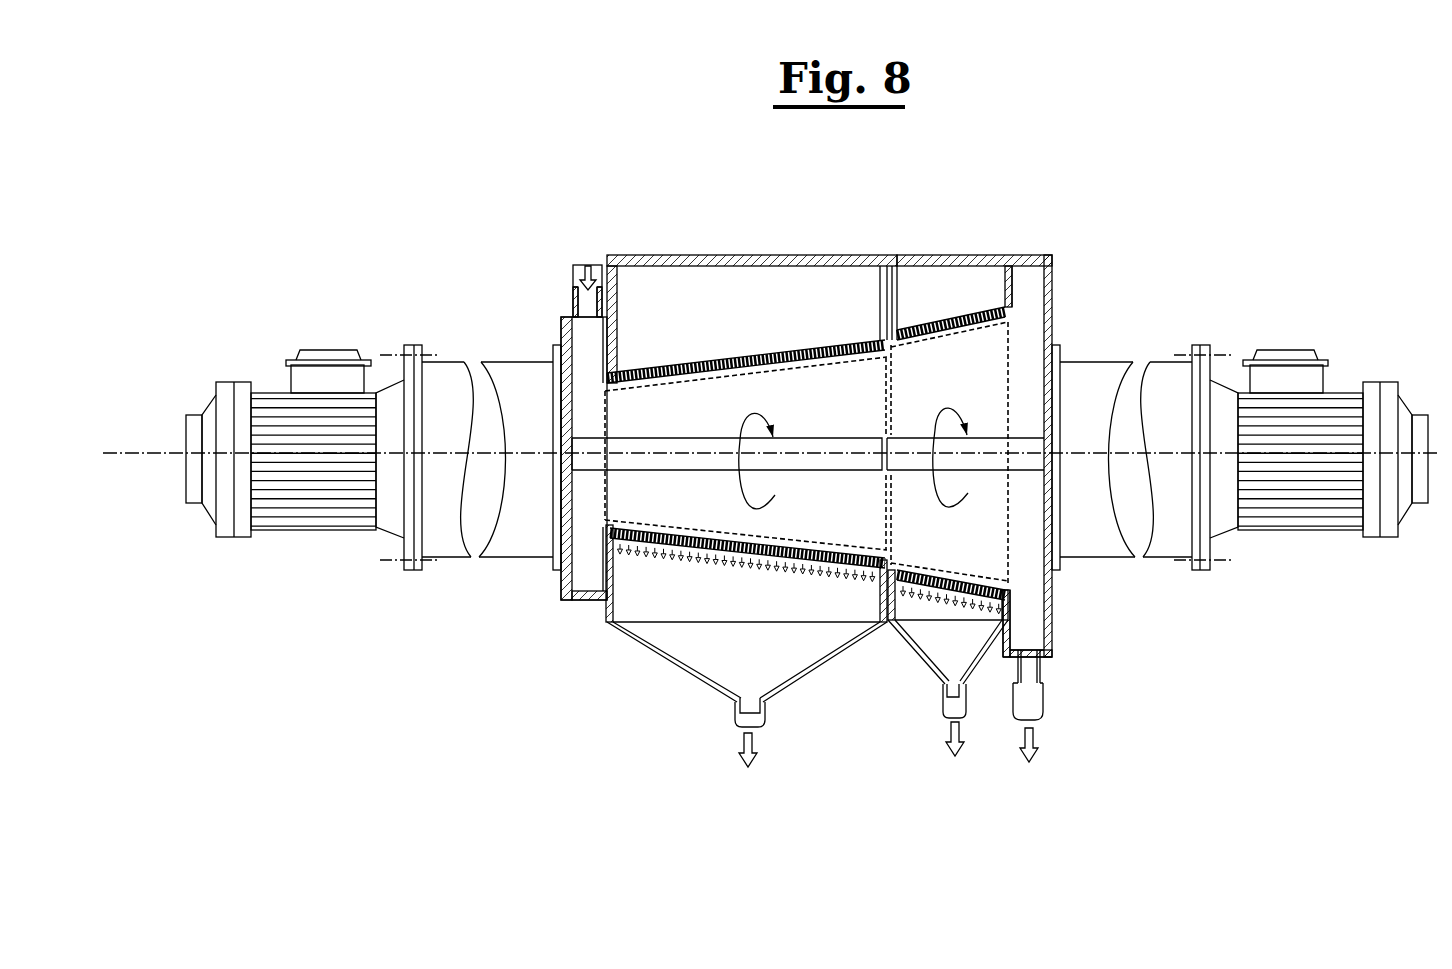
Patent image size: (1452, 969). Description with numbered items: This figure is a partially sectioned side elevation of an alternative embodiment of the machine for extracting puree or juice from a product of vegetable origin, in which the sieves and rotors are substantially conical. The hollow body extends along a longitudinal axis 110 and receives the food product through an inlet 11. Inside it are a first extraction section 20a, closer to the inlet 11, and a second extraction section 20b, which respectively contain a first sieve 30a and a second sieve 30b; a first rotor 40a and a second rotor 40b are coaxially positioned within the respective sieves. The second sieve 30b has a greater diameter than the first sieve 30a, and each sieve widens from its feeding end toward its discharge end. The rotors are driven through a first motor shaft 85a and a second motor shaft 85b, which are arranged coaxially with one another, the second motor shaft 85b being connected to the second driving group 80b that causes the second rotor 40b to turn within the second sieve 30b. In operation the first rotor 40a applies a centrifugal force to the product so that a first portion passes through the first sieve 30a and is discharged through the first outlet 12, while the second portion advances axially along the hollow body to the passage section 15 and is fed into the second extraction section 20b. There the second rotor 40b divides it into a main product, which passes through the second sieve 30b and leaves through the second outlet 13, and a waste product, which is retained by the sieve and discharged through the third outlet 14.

The inlet 11 is at (577, 280).
The first outlet 12 is at (705, 698).
The second outlet 13 is at (915, 670).
The third outlet 14 is at (1048, 673).
The passage section 15 is at (872, 408).
The first extraction section 20a is at (682, 355).
The second extraction section 20b is at (968, 305).
The first sieve 30a is at (730, 320).
The second sieve 30b is at (923, 292).
The first rotor 40a is at (597, 418).
The second rotor 40b is at (1013, 562).
The first motor shaft 85a is at (593, 487).
The second motor shaft 85b is at (1027, 412).
The second driving group 80b is at (1299, 550).
The longitudinal axis 110 is at (133, 447).